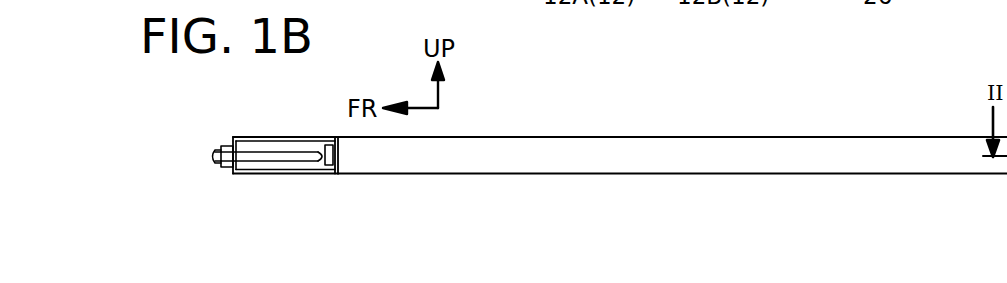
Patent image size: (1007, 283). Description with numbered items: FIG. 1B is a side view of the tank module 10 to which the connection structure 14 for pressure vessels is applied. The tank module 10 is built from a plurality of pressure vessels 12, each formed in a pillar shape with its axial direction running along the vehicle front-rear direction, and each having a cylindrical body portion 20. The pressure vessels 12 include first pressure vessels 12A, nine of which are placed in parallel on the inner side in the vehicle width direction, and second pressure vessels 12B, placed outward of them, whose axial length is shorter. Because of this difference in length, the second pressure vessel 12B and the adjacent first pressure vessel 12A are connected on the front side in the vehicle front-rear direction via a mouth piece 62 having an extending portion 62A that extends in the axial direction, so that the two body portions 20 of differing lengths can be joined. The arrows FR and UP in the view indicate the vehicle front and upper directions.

The tank module 10 is at (620, 145).
The pressure vessel 12 is at (620, 195).
The first pressure vessel 12A is at (302, 175).
The second pressure vessel 12B is at (640, 175).
The connection structure 14 is at (843, 128).
The body portion 20 is at (270, 166).
The mouth piece 62 is at (329, 148).
The extending portion 62A is at (265, 156).